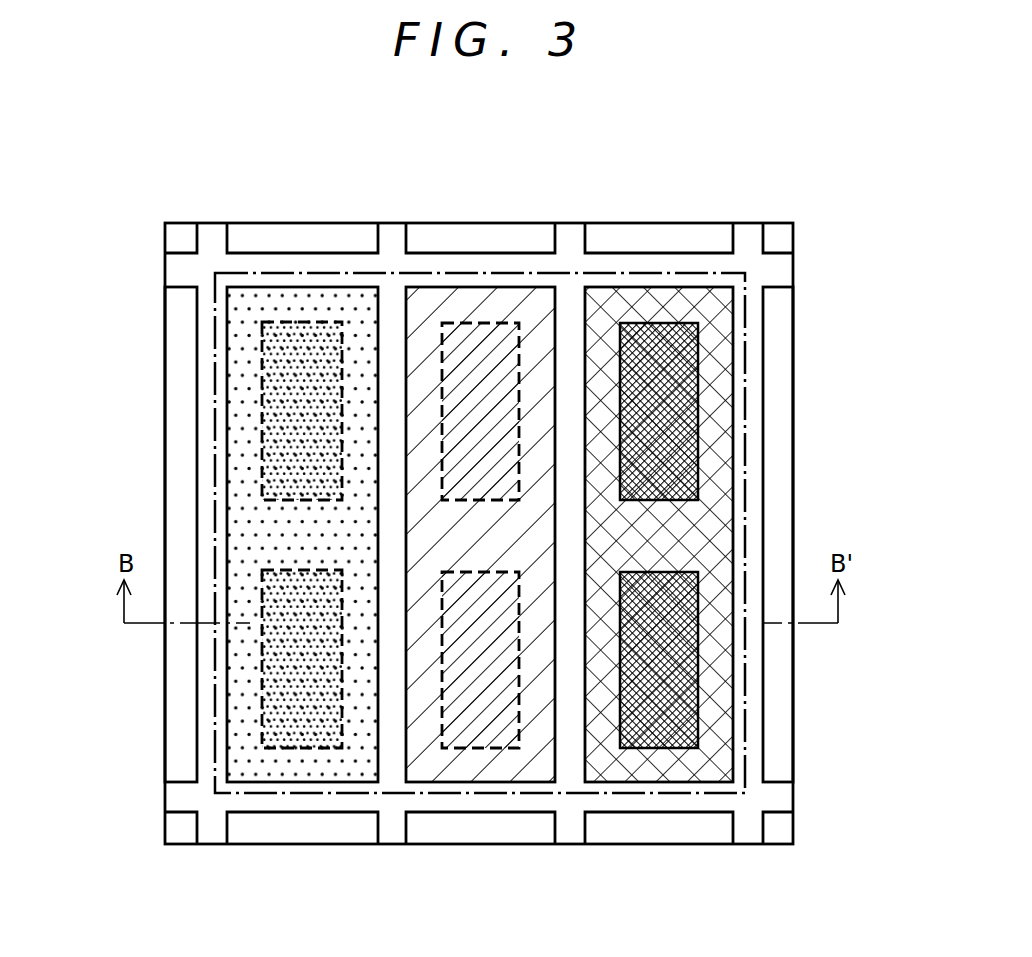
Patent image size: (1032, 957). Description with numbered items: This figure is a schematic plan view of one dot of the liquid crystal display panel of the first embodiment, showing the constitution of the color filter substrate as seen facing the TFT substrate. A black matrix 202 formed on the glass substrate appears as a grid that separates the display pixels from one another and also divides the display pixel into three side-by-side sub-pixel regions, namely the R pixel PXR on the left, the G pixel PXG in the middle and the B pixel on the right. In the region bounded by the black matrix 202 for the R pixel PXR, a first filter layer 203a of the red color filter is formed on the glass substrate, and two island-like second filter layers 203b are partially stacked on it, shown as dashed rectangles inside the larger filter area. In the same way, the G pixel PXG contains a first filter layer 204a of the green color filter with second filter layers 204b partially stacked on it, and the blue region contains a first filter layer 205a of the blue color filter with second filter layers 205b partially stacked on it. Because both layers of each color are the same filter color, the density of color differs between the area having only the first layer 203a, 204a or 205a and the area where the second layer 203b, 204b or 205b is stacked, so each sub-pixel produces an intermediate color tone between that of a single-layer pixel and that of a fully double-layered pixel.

The black matrix 202 is at (392, 695).
The first filter layer of red color filter 203a is at (240, 368).
The second filter layer of red color filter 203b is at (302, 319).
The first filter layer of green color filter 204a is at (536, 732).
The second filter layer of green color filter 204b is at (486, 320).
The first filter layer of blue color filter 205a is at (717, 362).
The second filter layer of blue color filter 205b is at (657, 320).
The G pixel PXG is at (527, 282).
The R pixel PXR is at (222, 453).